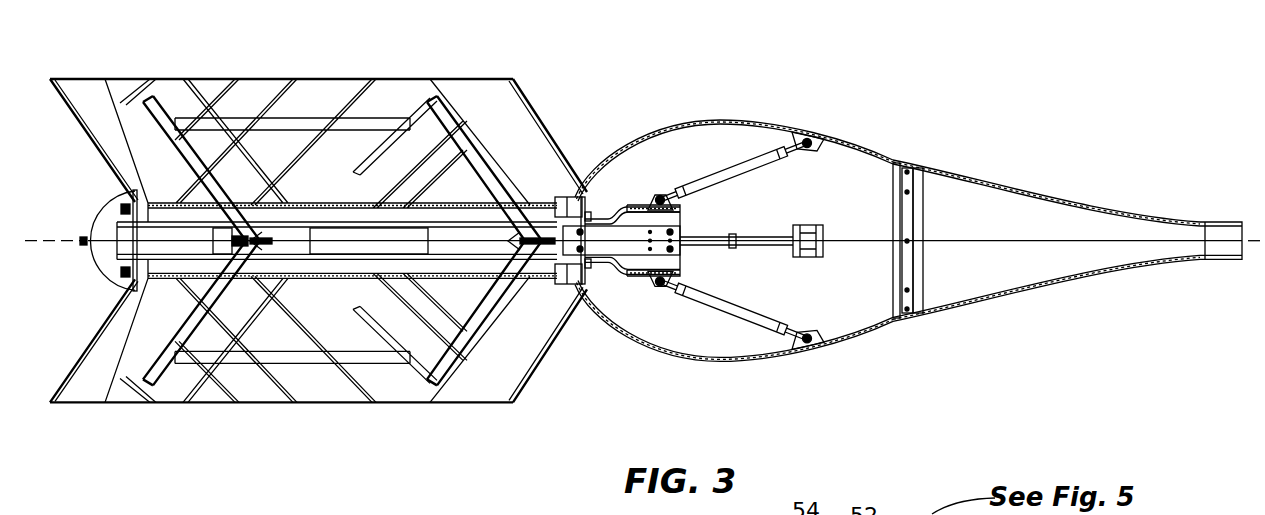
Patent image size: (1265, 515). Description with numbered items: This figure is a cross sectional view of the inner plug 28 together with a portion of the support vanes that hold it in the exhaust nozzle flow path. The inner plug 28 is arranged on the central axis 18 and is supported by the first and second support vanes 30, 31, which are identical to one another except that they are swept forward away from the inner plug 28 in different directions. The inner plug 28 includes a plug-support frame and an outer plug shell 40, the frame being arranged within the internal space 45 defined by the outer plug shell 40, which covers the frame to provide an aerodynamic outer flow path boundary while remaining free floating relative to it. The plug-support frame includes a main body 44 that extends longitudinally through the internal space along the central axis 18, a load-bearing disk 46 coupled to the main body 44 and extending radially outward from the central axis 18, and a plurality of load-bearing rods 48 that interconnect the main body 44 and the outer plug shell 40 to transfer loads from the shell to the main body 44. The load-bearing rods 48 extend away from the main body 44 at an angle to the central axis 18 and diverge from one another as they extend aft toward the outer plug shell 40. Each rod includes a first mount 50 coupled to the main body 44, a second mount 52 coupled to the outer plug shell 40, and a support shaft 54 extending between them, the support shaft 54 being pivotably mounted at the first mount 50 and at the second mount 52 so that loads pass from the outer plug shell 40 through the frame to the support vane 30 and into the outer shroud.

The central axis 18 is at (1262, 243).
The inner plug 28 is at (1048, 160).
The support vane 30 is at (529, 91).
The second support vane 31 is at (535, 386).
The outer plug shell 40 is at (801, 189).
The main body 44 is at (588, 198).
The internal space 45 is at (690, 329).
The load-bearing disk 46 is at (581, 279).
The load-bearing rods 48 is at (698, 136).
The first mount 50 is at (655, 193).
The second mount 52 is at (818, 134).
The support shaft 54 is at (737, 152).